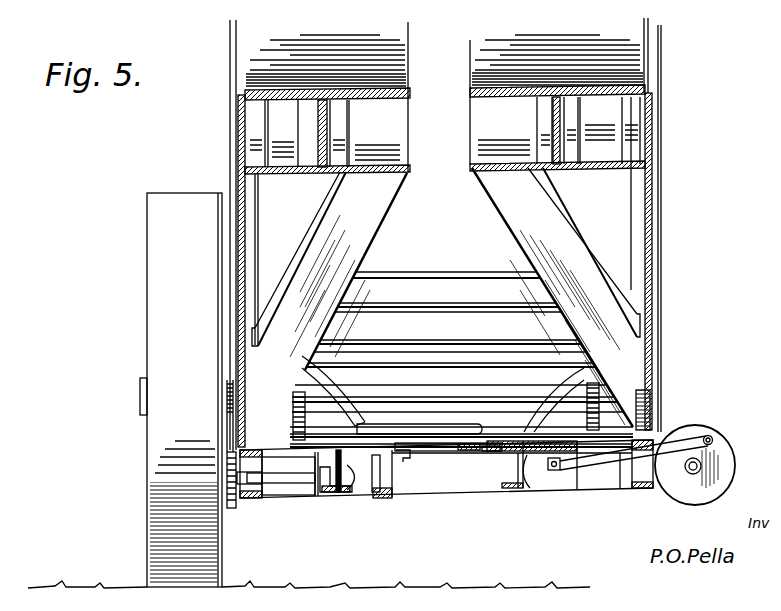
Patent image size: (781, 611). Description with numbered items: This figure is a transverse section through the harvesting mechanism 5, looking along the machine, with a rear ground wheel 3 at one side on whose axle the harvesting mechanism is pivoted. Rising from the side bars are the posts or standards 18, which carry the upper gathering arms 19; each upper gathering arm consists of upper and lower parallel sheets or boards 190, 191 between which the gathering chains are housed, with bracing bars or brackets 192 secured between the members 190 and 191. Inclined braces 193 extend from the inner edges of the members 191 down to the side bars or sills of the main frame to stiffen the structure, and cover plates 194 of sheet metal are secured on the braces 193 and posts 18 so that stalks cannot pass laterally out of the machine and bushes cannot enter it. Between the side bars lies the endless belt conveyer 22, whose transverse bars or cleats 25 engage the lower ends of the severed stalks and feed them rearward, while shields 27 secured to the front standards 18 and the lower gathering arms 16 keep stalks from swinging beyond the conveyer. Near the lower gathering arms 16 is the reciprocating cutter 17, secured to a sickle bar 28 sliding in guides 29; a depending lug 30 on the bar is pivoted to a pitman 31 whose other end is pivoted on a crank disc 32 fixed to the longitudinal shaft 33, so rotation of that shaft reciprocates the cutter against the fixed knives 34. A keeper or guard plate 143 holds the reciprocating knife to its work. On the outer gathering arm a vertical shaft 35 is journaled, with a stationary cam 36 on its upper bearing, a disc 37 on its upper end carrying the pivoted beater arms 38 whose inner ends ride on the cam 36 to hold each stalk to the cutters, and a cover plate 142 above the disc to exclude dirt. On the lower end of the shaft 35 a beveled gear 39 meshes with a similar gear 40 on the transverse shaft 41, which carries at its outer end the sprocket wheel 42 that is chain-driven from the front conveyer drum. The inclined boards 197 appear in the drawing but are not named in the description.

The rear ground wheel 3 is at (148, 507).
The harvesting mechanism 5 is at (438, 487).
The lower gathering arm 16 is at (378, 455).
The reciprocating cutter 17 is at (453, 451).
The post or standard 18 is at (235, 143).
The upper gathering arm 19 is at (464, 156).
The endless belt conveyer 22 is at (385, 288).
The transverse bar or cleat 25 is at (430, 308).
The shield 27 is at (312, 378).
The sickle bar 28 is at (463, 453).
The guide 29 is at (358, 467).
The depending lug 30 is at (557, 470).
The pitman 31 is at (618, 457).
The crank disc 32 is at (722, 476).
The longitudinal shaft 33 is at (717, 460).
The fixed knife 34 is at (487, 453).
The vertical shaft 35 is at (348, 490).
The stationary cam 36 is at (317, 452).
The disc 37 is at (400, 453).
The beater arm 38 is at (350, 417).
The beveled gear 39 is at (334, 487).
The beveled gear 40 is at (317, 483).
The transverse shaft 41 is at (273, 484).
The sprocket wheel 42 is at (232, 509).
The cover plate 142 is at (353, 413).
The keeper or guard plate 143 is at (487, 445).
The upper sheet or board 190 is at (407, 80).
The lower sheet or board 191 is at (410, 154).
The bracing bar or bracket 192 is at (310, 117).
The inclined brace 193 is at (318, 215).
The cover plate 194 is at (240, 203).
The inclined board 197 is at (487, 195).